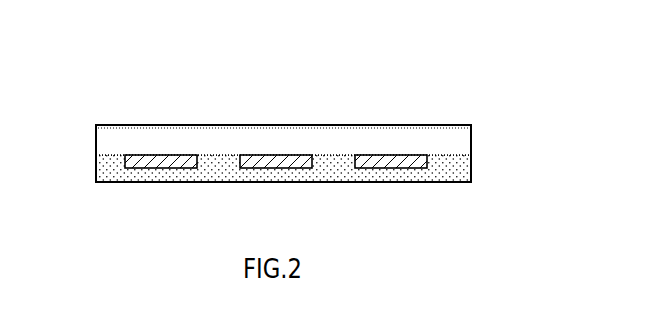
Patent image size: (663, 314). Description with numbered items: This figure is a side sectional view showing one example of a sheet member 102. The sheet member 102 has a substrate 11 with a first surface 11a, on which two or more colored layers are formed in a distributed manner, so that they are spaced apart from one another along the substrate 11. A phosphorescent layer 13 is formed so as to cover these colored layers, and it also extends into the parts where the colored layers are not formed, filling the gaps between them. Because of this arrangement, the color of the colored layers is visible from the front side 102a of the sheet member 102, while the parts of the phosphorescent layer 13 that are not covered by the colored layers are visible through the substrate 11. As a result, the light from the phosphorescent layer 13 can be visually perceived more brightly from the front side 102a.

The sheet member 102 is at (319, 136).
The front side 102a is at (388, 125).
The substrate 11 is at (458, 140).
The first surface 11a is at (345, 157).
The phosphorescent layer 13 is at (455, 175).